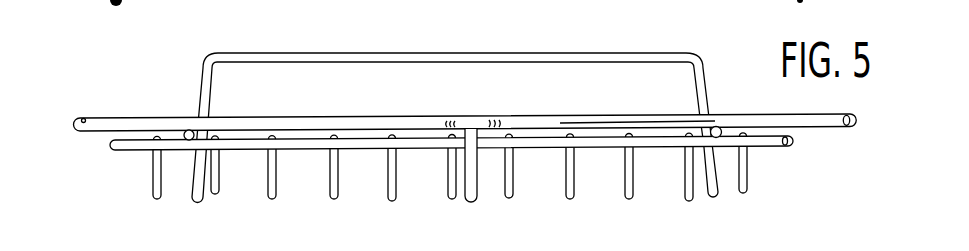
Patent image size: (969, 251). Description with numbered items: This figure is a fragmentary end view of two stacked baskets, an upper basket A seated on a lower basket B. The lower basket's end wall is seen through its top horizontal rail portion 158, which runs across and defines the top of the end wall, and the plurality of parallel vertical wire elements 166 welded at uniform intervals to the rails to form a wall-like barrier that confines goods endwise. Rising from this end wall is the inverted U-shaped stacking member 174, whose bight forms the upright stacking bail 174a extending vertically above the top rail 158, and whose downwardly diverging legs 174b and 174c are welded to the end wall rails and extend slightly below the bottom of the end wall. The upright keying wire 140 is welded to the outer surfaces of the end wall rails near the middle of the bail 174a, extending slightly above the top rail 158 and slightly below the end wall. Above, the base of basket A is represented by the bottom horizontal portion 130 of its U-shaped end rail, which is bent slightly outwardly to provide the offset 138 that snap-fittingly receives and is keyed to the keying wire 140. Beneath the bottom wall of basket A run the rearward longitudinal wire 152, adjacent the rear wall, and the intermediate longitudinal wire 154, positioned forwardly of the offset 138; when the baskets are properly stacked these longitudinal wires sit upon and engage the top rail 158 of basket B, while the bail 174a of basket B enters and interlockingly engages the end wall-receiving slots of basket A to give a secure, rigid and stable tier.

The bottom horizontal portion 130 is at (138, 117).
The offset 138 is at (472, 118).
The upright keying wire 140 is at (477, 181).
The rearward longitudinal wire 152 is at (718, 128).
The intermediate longitudinal wire 154 is at (187, 150).
The top horizontal rail portion 158 is at (543, 148).
The vertical wire elements 166 is at (240, 184).
The inverted U-shaped stacking member 174 is at (213, 53).
The stacking bail 174a is at (452, 53).
The leg 174b is at (210, 98).
The leg 174c is at (695, 92).
The basket A is at (828, 130).
The basket B is at (691, 44).